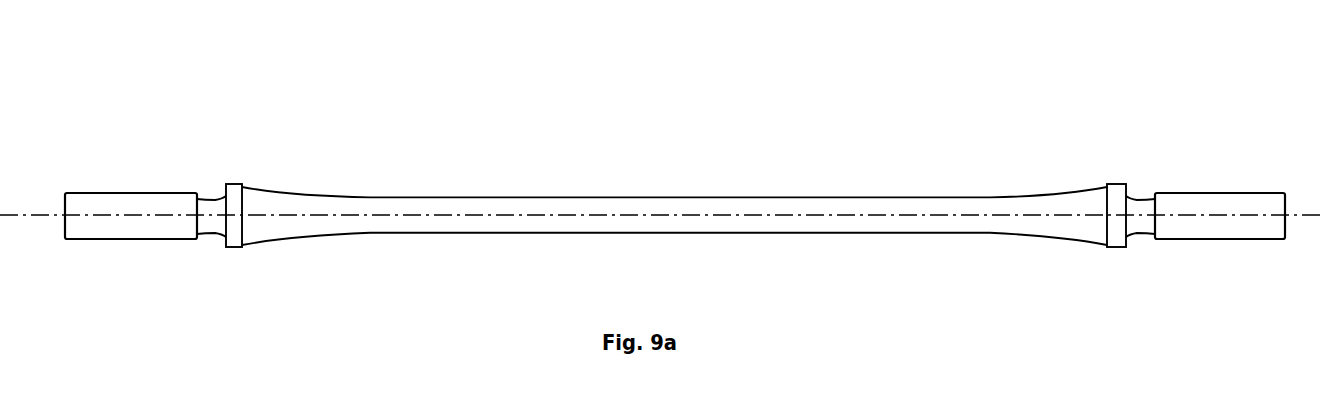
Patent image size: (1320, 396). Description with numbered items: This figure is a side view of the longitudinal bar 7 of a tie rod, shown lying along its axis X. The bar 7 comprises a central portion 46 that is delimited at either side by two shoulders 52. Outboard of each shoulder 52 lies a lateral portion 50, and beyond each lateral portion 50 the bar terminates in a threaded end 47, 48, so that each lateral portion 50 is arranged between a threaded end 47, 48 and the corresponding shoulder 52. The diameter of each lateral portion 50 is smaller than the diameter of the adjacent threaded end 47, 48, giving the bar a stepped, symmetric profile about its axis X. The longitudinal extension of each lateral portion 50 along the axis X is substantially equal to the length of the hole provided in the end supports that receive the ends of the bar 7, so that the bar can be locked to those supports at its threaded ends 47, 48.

The longitudinal bar 7 is at (693, 137).
The central portion 46 is at (608, 207).
The threaded end 47 is at (1213, 193).
The threaded end 48 is at (115, 193).
The lateral portion 50 is at (210, 212).
The shoulder 52 is at (226, 184).
The axis X is at (847, 215).